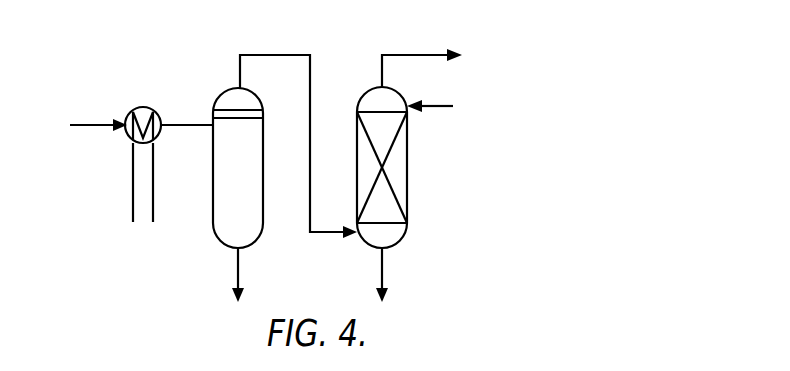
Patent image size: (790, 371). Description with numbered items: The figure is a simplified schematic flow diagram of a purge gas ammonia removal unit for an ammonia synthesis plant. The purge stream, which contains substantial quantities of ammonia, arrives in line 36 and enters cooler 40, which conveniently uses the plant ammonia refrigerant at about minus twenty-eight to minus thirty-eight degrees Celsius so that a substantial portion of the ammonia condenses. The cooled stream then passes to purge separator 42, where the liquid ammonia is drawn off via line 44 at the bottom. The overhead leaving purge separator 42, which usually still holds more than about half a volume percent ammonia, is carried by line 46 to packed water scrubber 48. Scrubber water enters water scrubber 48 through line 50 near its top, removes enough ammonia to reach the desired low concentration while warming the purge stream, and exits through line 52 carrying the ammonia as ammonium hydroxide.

The line 36 is at (97, 122).
The cooler 40 is at (145, 107).
The purge separator 42 is at (213, 185).
The line 44 is at (236, 268).
The line 46 is at (281, 53).
The packed water scrubber 48 is at (408, 175).
The line 50 is at (433, 108).
The line 52 is at (384, 268).